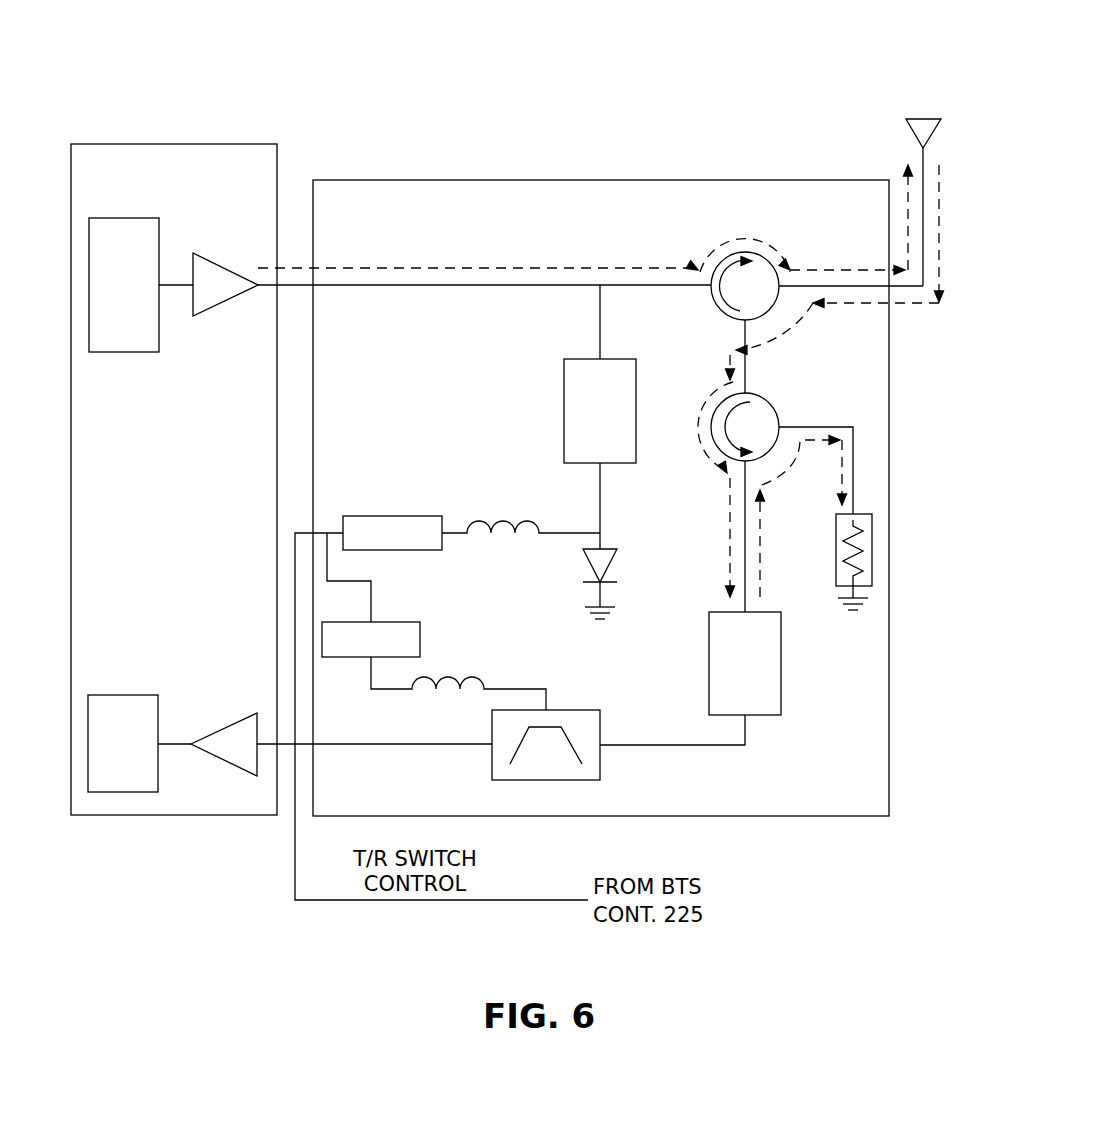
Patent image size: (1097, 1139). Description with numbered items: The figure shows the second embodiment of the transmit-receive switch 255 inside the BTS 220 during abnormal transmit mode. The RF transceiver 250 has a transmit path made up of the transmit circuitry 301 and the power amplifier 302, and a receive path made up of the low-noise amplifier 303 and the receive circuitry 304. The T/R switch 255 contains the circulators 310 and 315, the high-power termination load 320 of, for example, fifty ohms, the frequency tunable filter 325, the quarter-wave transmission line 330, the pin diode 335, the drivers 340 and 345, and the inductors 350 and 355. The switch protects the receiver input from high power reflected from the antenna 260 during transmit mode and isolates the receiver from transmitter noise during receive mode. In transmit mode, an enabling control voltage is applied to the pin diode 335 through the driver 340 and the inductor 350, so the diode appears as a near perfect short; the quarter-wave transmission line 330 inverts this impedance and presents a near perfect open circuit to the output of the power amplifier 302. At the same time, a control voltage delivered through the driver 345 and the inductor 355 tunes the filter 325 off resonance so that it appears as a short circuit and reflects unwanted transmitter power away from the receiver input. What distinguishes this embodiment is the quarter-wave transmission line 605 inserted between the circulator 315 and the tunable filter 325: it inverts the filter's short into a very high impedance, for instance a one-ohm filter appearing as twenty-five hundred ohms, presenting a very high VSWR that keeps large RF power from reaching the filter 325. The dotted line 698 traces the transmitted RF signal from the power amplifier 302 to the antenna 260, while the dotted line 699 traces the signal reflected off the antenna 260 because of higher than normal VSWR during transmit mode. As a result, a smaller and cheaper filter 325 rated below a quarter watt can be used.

The BTS 220 is at (699, 73).
The RF transceiver 250 is at (176, 144).
The transmit-receive (T/R) switch 255 is at (600, 180).
The antenna 260 is at (921, 118).
The transmit (XMIT) circuitry 301 is at (124, 352).
The power amplifier (PA) 302 is at (230, 266).
The low-noise amplifier (LNA) 303 is at (224, 728).
The receive (RCV) circuitry 304 is at (121, 695).
The circulator 310 is at (745, 252).
The circulator 315 is at (773, 405).
The high-power termination load 320 is at (836, 548).
The frequency tunable filter 325 is at (575, 710).
The quarter-wave transmission line 330 is at (564, 416).
The pin diode 335 is at (617, 566).
The driver 340 is at (388, 516).
The driver 345 is at (402, 622).
The inductor 350 is at (501, 520).
The inductor 355 is at (470, 678).
The quarter-wave transmission line 605 is at (709, 662).
The dotted line 698 is at (543, 267).
The dotted line 699 is at (913, 308).